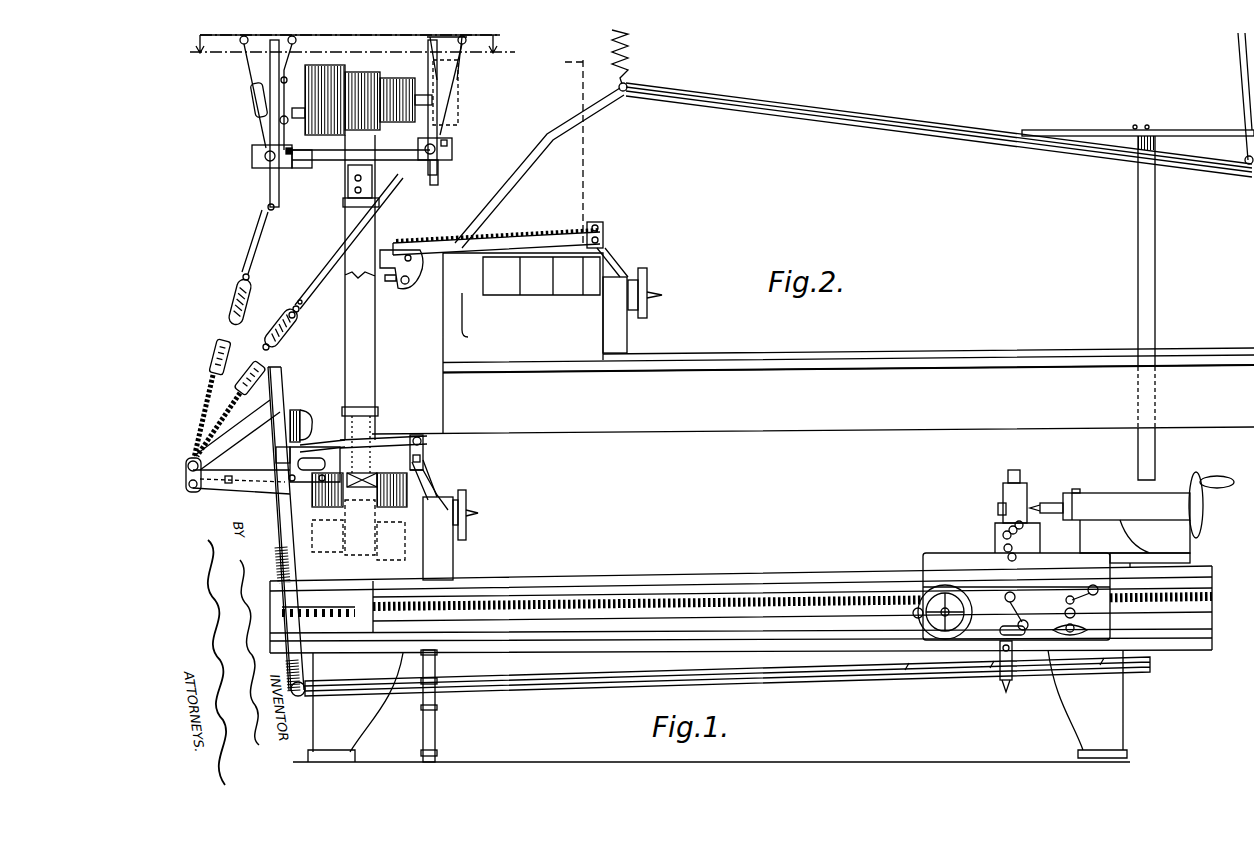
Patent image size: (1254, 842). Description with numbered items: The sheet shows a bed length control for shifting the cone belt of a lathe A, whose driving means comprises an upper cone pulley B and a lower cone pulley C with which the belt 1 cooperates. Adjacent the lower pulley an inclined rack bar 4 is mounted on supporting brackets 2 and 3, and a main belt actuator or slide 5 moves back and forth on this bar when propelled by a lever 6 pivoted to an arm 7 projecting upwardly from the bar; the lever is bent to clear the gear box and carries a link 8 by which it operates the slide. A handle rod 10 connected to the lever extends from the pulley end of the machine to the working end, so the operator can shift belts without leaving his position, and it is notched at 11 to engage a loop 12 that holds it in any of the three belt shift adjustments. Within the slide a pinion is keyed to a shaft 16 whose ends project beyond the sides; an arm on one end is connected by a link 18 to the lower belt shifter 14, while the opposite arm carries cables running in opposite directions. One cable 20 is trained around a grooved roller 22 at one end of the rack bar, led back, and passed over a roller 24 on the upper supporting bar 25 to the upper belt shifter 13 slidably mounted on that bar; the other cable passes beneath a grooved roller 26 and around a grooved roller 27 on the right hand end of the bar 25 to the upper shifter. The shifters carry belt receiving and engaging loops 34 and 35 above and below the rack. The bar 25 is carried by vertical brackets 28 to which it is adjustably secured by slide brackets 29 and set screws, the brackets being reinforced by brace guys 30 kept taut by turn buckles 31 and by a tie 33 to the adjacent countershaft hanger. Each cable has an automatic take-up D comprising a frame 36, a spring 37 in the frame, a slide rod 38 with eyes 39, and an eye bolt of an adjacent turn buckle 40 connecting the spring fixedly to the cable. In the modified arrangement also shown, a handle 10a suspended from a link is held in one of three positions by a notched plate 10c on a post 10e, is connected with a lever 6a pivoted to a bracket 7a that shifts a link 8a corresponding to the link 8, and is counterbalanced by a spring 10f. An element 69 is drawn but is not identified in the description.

In FIG. 2, the belt 1 is at (360, 235).
In FIG. 1, the belt 1 is at (360, 387).
In FIG. 1, the supporting bracket 2 is at (215, 496).
In FIG. 1, the supporting bracket 3 is at (448, 496).
In FIG. 1, the inclined rack bar 4 is at (417, 456).
In FIG. 1, the main belt actuator or slide 5 is at (314, 472).
In FIG. 1, the lever 6 is at (298, 565).
In FIG. 1, the arm 7 is at (280, 397).
In FIG. 1, the link 8 is at (334, 443).
In FIG. 1, the handle rod 10 is at (786, 672).
In FIG. 1, the notch 11 is at (1102, 668).
In FIG. 1, the loop 12 is at (1014, 680).
In FIG. 2, the upper belt shifter 13 is at (350, 186).
In FIG. 1, the lower belt shifter 14 is at (378, 425).
In FIG. 1, the shaft 16 is at (272, 492).
In FIG. 1, the link 18 is at (361, 470).
In FIG. 2, the cable 20 is at (255, 236).
In FIG. 1, the cable 20 is at (392, 438).
In FIG. 1, the grooved roller 22 is at (421, 440).
In FIG. 2, the roller 24 is at (306, 166).
In FIG. 2, the upper supporting bar 25 is at (290, 129).
In FIG. 1, the grooved roller 26 is at (237, 435).
In FIG. 2, the grooved roller 27 is at (436, 165).
In FIG. 2, the vertical brackets 28 is at (270, 88).
In FIG. 2, the slide brackets 29 is at (262, 168).
In FIG. 2, the brace guys 30 is at (248, 72).
In FIG. 2, the turn buckles 31 is at (253, 110).
In FIG. 2, the tie 33 is at (458, 122).
In FIG. 2, the loop 34 is at (362, 207).
In FIG. 1, the loop 34 is at (362, 407).
In FIG. 1, the loop 35 is at (378, 482).
In FIG. 2, the frame 36 is at (278, 338).
In FIG. 2, the spring 37 is at (281, 313).
In FIG. 2, the slide rod 38 is at (299, 300).
In FIG. 2, the eyes 39 is at (304, 306).
In FIG. 1, the turn buckle 40 is at (212, 353).
In FIG. 1, the hatched block 69 is at (301, 416).
In FIG. 2, the lever 6a is at (532, 157).
In FIG. 2, the bracket 7a is at (403, 250).
In FIG. 2, the link 8a is at (495, 237).
In FIG. 2, the handle 10a is at (918, 124).
In FIG. 2, the notched plate 10c is at (1092, 128).
In FIG. 2, the post 10e is at (1156, 240).
In FIG. 2, the spring 10f is at (630, 52).
In FIG. 2, the lathe A is at (342, 57).
In FIG. 1, the lathe A is at (632, 575).
In FIG. 2, the upper cone pulley B is at (362, 110).
In FIG. 1, the lower cone pulley C is at (438, 478).
In FIG. 2, the automatic take-up D is at (260, 314).